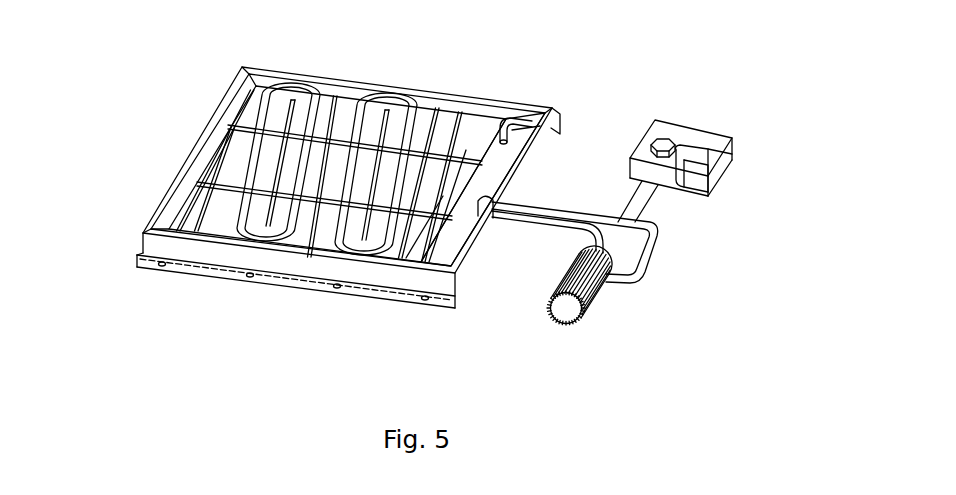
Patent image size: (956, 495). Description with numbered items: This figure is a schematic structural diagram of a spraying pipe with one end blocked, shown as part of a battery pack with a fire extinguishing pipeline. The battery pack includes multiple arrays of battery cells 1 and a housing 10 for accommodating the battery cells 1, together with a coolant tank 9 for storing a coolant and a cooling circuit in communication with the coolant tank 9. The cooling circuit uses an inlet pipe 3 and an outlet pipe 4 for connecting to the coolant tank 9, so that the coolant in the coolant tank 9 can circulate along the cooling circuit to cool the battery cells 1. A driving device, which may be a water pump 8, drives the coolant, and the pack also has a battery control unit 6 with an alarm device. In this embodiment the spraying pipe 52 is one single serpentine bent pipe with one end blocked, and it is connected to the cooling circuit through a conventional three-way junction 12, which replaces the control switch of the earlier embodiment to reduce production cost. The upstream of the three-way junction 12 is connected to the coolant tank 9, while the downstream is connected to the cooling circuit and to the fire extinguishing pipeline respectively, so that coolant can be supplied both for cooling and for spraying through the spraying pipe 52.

The battery cells 1 is at (325, 243).
The housing 10 is at (175, 207).
The spraying pipe 52 is at (402, 97).
The three-way junction 12 is at (515, 122).
The inlet pipe 3 is at (567, 212).
The outlet pipe 4 is at (524, 220).
The battery control unit 6 is at (445, 250).
The water pump 8 is at (590, 278).
The coolant tank 9 is at (697, 142).